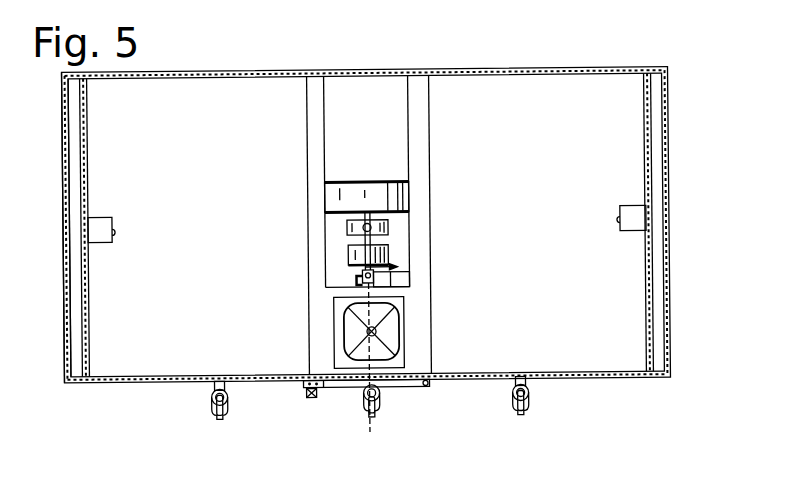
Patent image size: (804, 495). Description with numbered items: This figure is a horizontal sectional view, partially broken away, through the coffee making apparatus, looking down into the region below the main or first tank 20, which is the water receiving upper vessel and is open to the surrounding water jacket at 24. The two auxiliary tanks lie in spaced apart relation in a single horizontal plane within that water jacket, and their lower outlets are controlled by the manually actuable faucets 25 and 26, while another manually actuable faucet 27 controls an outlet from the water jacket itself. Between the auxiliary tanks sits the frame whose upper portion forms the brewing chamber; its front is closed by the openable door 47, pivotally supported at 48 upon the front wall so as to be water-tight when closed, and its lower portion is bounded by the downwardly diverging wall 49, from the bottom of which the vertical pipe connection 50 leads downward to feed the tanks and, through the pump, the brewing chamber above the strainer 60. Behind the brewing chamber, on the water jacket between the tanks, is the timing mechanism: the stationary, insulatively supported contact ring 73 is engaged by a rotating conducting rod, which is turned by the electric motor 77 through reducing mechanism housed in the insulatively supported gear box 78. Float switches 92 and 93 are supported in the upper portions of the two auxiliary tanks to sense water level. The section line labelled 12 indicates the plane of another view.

The section line 12 is at (396, 422).
The main or first tank 20 is at (207, 78).
The opening to water jacket 24 is at (72, 299).
The manually actuable faucet 25 is at (207, 399).
The manually actuable faucet 26 is at (534, 398).
The manually actuable faucet 27 is at (381, 398).
The openable door 47 is at (349, 388).
The pivot 48 is at (428, 387).
The downwardly diverging wall 49 is at (388, 330).
The pipe connection 50 is at (347, 333).
The strainer 60 is at (341, 304).
The contact ring 73 is at (376, 195).
The electric motor 77 is at (389, 262).
The gear box 78 is at (389, 230).
The float switch 92 is at (110, 224).
The float switch 93 is at (633, 212).